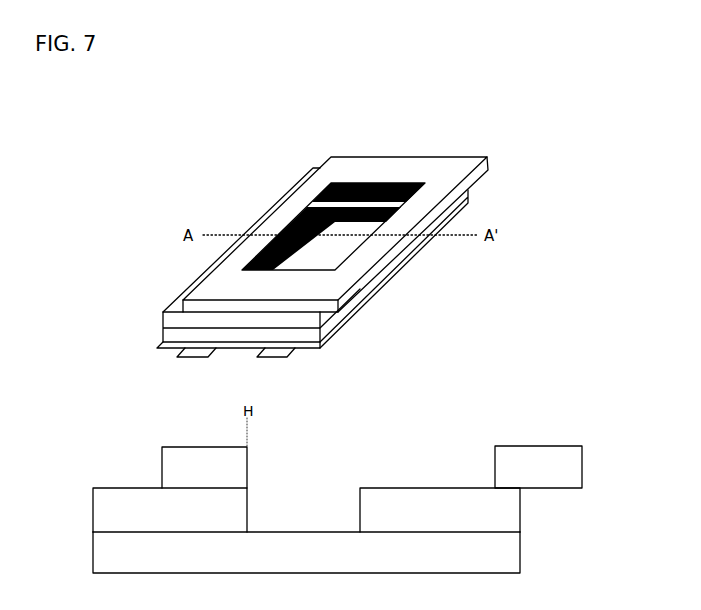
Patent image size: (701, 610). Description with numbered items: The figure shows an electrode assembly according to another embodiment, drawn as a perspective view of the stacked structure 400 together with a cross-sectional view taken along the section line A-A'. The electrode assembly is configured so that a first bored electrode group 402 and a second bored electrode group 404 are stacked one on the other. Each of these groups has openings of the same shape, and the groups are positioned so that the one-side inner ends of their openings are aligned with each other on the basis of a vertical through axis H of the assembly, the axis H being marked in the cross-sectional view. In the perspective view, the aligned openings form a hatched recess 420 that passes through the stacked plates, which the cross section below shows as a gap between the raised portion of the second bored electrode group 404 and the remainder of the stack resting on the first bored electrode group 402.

The semiconductor device 400 is at (330, 466).
The first bored electrode group 402 is at (470, 156).
The second bored electrode group 404 is at (162, 470).
The opening 420 is at (327, 240).